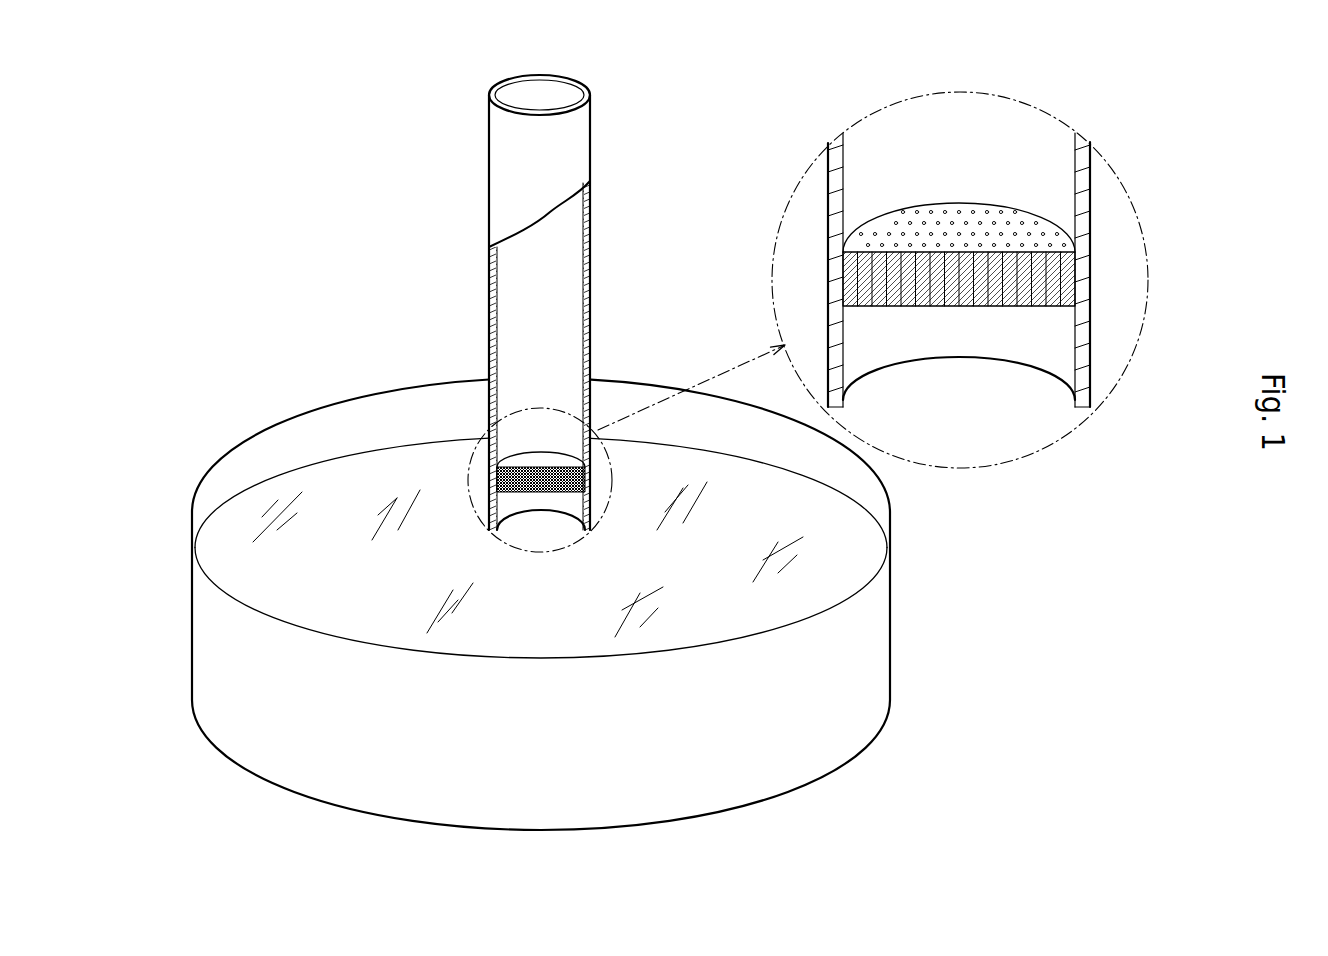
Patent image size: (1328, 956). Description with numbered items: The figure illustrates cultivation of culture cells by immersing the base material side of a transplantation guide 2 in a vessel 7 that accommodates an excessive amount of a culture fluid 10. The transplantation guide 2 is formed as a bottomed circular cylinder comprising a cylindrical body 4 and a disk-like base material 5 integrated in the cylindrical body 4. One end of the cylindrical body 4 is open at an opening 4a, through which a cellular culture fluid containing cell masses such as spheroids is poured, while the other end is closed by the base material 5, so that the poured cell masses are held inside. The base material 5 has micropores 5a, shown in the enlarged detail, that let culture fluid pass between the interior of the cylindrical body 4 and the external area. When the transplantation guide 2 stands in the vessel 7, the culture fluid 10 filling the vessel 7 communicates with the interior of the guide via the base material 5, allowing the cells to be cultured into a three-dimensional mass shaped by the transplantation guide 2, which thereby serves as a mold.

The transplantation guide 2 is at (777, 302).
The cylindrical body 4 is at (805, 302).
The opening 4a is at (575, 97).
The base material 5 is at (541, 455).
The micropores 5a is at (905, 308).
The vessel 7 is at (894, 651).
The culture fluid 10 is at (357, 483).